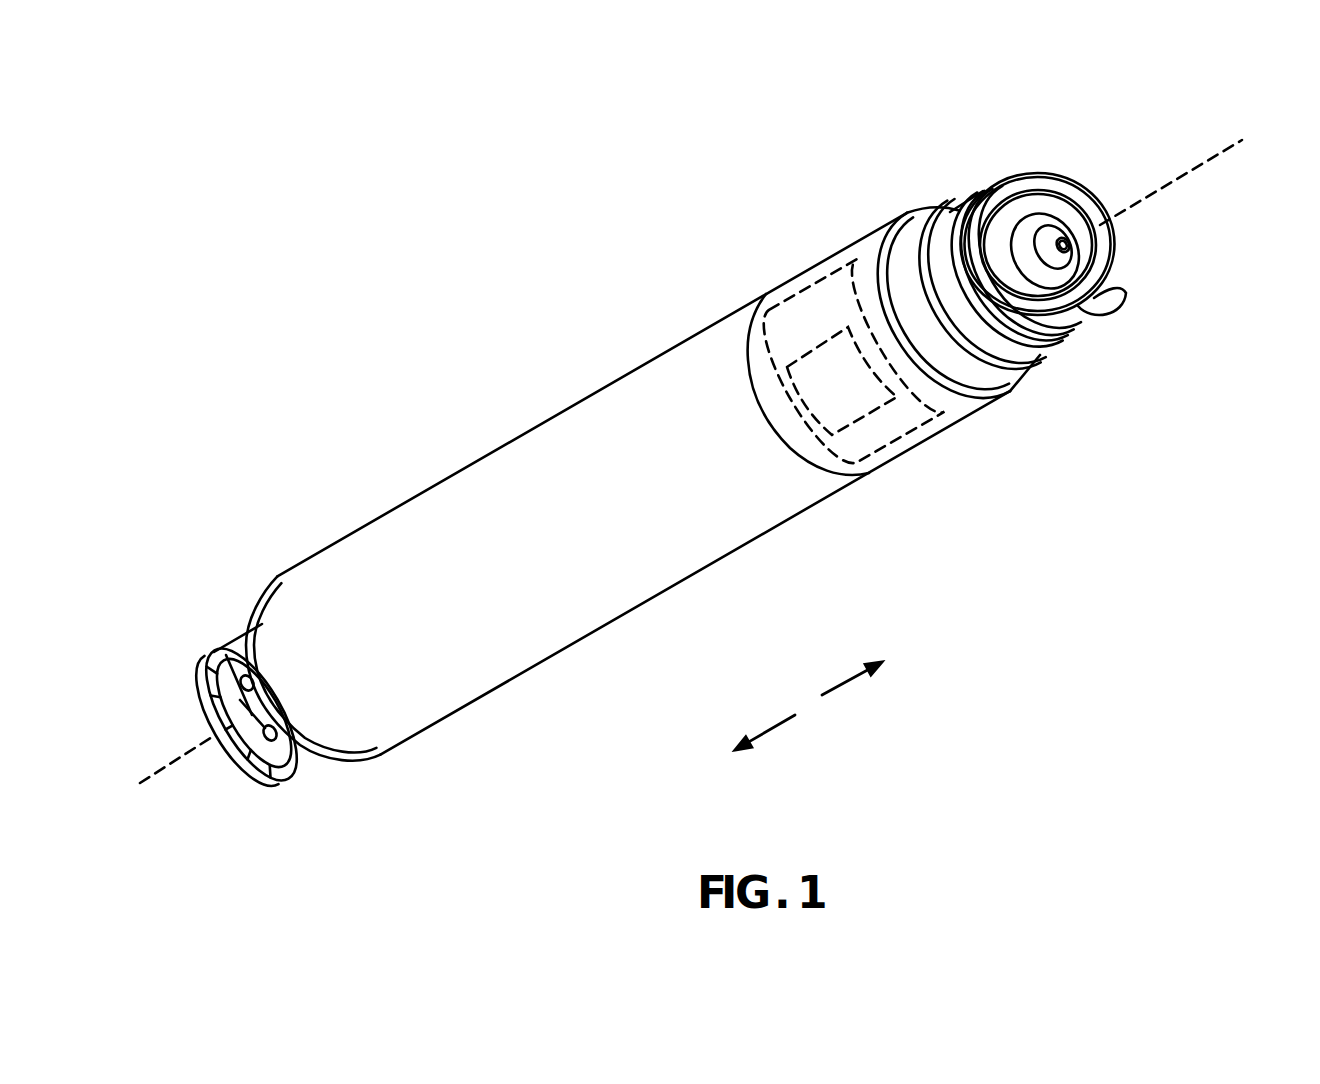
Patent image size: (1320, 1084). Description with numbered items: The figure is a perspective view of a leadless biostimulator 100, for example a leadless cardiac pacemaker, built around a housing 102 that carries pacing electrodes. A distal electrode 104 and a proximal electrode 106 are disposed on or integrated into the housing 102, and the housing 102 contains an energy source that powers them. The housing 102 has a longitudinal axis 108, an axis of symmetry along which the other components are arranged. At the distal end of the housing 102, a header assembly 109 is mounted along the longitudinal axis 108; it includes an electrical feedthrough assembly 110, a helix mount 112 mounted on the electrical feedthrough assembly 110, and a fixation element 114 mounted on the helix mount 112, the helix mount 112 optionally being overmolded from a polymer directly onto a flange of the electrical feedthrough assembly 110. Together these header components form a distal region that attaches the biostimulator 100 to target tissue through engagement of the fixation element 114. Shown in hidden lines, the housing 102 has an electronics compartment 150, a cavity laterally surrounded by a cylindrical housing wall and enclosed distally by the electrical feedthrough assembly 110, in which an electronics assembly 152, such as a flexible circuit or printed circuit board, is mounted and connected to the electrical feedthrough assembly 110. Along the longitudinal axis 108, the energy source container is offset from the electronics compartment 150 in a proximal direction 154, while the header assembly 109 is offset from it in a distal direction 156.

The biostimulator 100 is at (470, 365).
The housing 102 is at (665, 372).
The distal electrode 104 is at (1052, 232).
The proximal electrode 106 is at (552, 633).
The longitudinal axis 108 is at (1197, 163).
The header assembly 109 is at (981, 183).
The electrical feedthrough assembly 110 is at (1013, 380).
The helix mount 112 is at (1085, 283).
The fixation element 114 is at (1105, 237).
The electronics compartment 150 is at (902, 443).
The electronics assembly 152 is at (823, 340).
The proximal direction 154 is at (765, 733).
The distal direction 156 is at (843, 683).